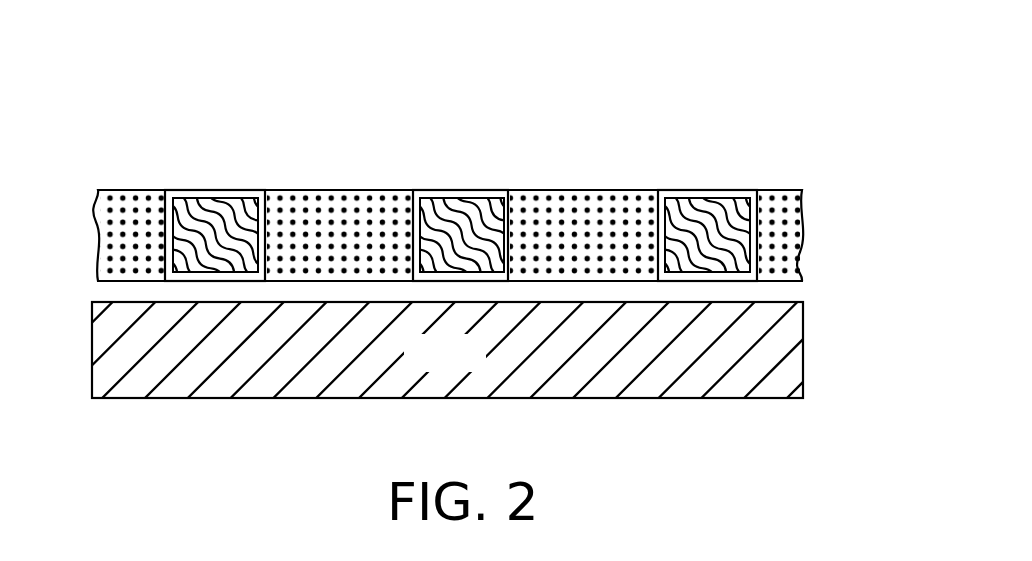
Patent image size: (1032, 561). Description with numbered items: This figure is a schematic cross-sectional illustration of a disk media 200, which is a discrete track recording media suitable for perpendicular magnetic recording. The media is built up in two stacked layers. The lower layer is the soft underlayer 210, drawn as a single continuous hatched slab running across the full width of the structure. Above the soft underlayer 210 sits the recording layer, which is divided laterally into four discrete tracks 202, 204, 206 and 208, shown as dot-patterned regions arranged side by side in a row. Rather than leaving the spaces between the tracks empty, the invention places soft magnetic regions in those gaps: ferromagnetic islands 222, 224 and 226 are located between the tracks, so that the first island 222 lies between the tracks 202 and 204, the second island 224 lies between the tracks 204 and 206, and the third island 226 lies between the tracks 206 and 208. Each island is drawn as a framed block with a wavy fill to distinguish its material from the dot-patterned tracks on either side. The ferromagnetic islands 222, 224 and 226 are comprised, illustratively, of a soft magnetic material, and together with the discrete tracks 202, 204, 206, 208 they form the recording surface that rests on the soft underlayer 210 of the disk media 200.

The disk media 200 is at (783, 85).
The discrete track 202 is at (123, 190).
The discrete track 204 is at (343, 190).
The discrete track 206 is at (589, 190).
The discrete track 208 is at (783, 190).
The soft underlayer 210 is at (803, 345).
The ferromagnetic island 222 is at (218, 190).
The ferromagnetic island 224 is at (468, 190).
The ferromagnetic island 226 is at (701, 190).